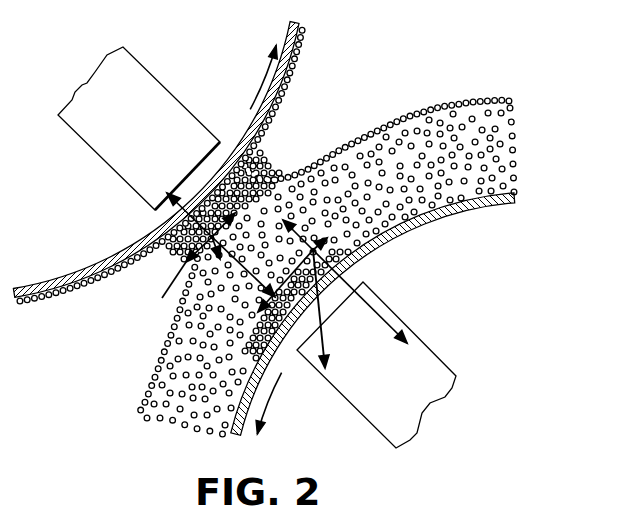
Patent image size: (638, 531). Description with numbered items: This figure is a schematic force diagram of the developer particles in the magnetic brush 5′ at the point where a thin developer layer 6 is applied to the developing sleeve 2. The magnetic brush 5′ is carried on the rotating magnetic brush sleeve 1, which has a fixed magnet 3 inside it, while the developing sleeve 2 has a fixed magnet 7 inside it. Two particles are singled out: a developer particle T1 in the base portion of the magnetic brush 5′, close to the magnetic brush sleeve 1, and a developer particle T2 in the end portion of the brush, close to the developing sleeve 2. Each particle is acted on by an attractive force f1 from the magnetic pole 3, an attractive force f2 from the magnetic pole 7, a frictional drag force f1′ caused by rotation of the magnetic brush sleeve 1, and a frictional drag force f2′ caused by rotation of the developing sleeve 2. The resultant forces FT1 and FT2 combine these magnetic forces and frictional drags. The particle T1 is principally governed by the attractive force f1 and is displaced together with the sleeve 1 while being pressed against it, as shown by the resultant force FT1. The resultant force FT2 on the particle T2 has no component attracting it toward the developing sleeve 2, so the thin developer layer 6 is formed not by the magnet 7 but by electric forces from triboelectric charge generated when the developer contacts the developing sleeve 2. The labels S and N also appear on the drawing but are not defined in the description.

The magnetic brush sleeve 1 is at (413, 228).
The developing sleeve 2 is at (252, 128).
The fixed magnet 3 is at (421, 405).
The magnetic brush 5′ is at (456, 134).
The thin developer layer 6 is at (293, 71).
The fixed magnet 7 is at (143, 84).
The contact surface S is at (187, 176).
The normal force N is at (346, 334).
The developer particle T1 is at (313, 250).
The developer particle T2 is at (205, 233).
The attractive force f1 is at (312, 306).
The frictional drag force f1′ is at (235, 283).
The attractive force f2 is at (226, 207).
The frictional drag force f2′ is at (278, 227).
The resultant force FT1 is at (340, 316).
The resultant force FT2 is at (153, 292).